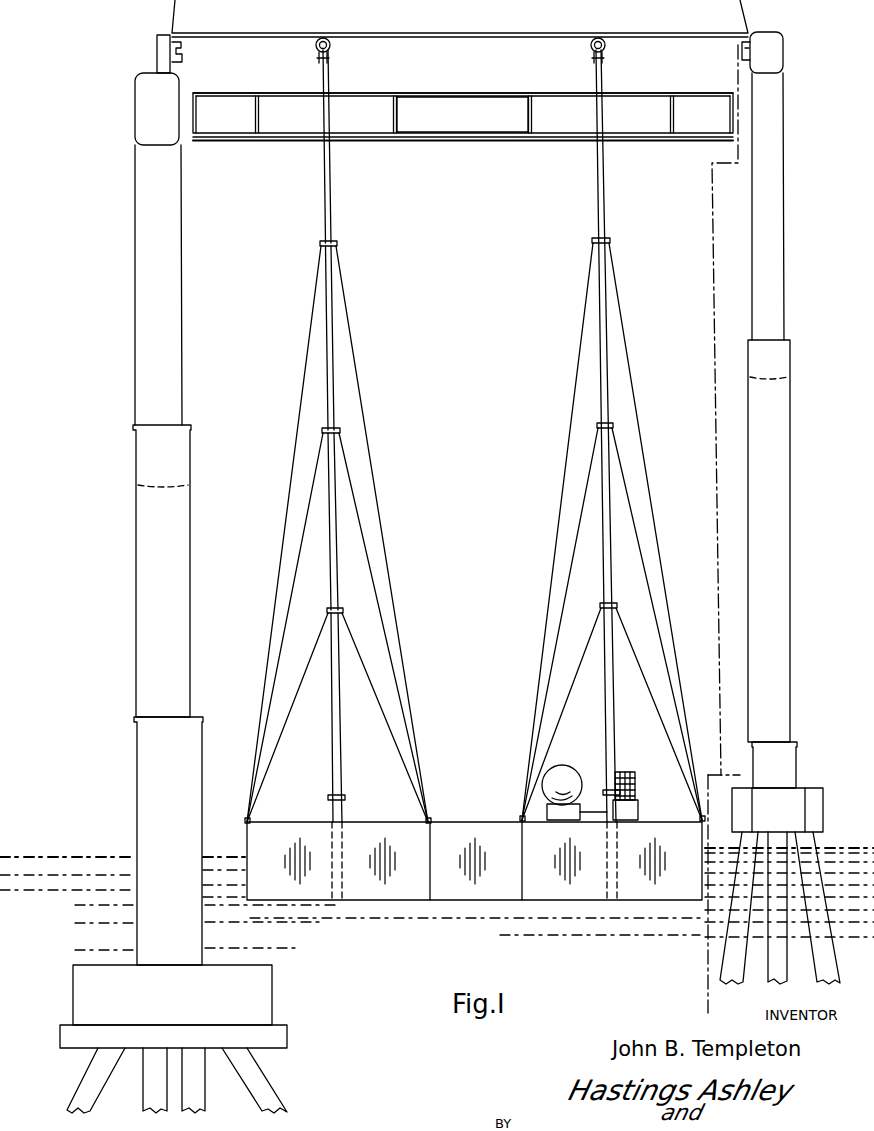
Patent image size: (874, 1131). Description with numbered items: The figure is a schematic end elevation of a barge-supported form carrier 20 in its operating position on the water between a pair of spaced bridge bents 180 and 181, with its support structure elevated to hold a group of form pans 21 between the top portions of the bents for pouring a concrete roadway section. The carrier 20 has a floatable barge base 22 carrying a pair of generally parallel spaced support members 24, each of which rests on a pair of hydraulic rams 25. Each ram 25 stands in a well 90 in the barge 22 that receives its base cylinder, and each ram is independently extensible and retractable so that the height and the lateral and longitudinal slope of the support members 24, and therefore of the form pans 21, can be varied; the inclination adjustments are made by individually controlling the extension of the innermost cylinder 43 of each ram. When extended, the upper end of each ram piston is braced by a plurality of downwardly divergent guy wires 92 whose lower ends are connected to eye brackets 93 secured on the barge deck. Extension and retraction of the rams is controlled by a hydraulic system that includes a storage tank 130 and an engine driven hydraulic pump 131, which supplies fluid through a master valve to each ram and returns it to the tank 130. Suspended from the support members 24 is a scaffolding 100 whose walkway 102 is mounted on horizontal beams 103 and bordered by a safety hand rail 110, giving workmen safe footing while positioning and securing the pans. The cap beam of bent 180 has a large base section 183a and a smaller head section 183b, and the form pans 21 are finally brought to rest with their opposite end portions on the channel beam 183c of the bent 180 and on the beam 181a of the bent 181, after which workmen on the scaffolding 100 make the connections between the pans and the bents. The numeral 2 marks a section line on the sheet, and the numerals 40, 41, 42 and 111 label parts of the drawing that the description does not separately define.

The section line for FIG. 2 is at (688, 1002).
The form carrier 20 is at (263, 346).
The form pans 21 is at (168, 13).
The floatable barge base 22 is at (390, 910).
The support members 24 is at (315, 47).
The hydraulic rams 25 is at (612, 199).
The lower mast section 40 is at (331, 745).
The mast section 41 is at (340, 557).
The mast section 42 is at (335, 382).
The innermost cylinder 43 is at (324, 209).
The well 90 is at (344, 862).
The guy wires 92 is at (300, 397).
The eye brackets 93 is at (246, 820).
The scaffolding 100 is at (420, 147).
The walkway 102 is at (456, 128).
The horizontal beams 103 is at (510, 137).
The safety hand rail 110 is at (492, 74).
The panel 111 is at (530, 101).
The storage tank 130 is at (590, 745).
The engine driven hydraulic pump 131 is at (648, 746).
The bridge bent 180 is at (278, 987).
The bridge bent 181 is at (702, 946).
The beam 181a is at (748, 40).
The base section 183a is at (142, 104).
The head section 183b is at (156, 45).
The channel beam 183c is at (182, 44).